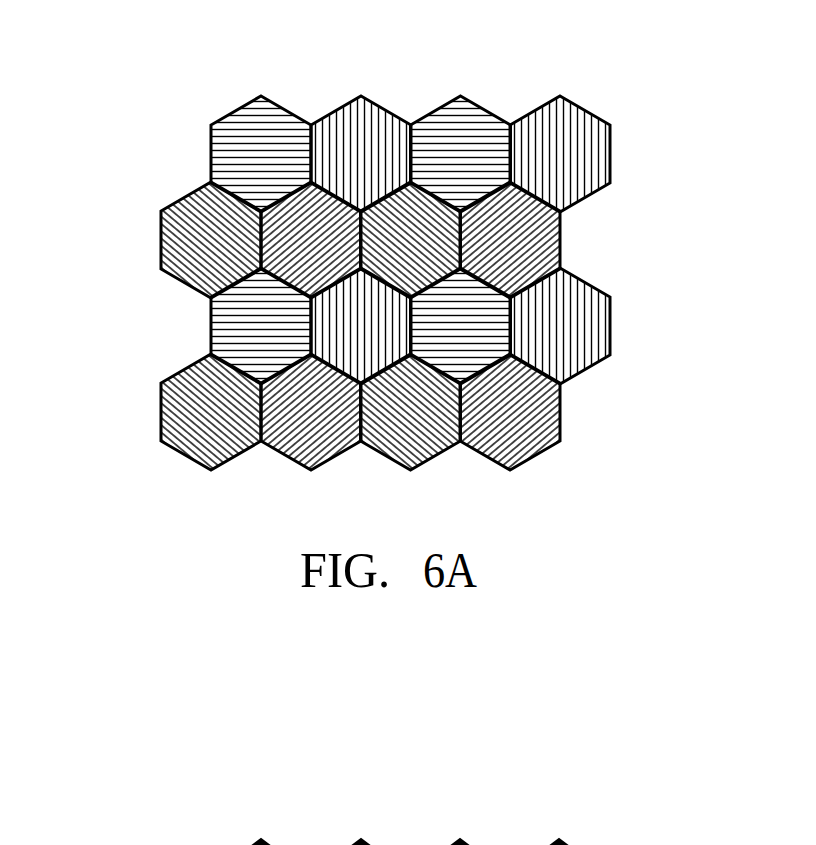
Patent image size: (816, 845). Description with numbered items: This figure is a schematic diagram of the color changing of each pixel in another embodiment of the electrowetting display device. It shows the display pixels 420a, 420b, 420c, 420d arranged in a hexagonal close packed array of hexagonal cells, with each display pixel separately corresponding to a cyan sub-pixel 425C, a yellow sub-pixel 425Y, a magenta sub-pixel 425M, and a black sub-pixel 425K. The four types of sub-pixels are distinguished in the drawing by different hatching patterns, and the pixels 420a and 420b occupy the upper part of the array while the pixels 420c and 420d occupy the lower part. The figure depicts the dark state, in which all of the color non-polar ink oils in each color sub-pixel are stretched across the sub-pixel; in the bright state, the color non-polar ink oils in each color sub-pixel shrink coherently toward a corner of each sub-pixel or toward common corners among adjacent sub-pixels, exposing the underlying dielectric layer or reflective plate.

The display pixel 420a is at (569, 153).
The display pixel 420b is at (140, 81).
The display pixel 420c is at (160, 482).
The display pixel 420d is at (580, 463).
The cyan sub-pixel 425C is at (487, 165).
The magenta sub-pixel 425M is at (579, 182).
The yellow sub-pixel 425Y is at (437, 250).
The black sub-pixel 425K is at (548, 228).